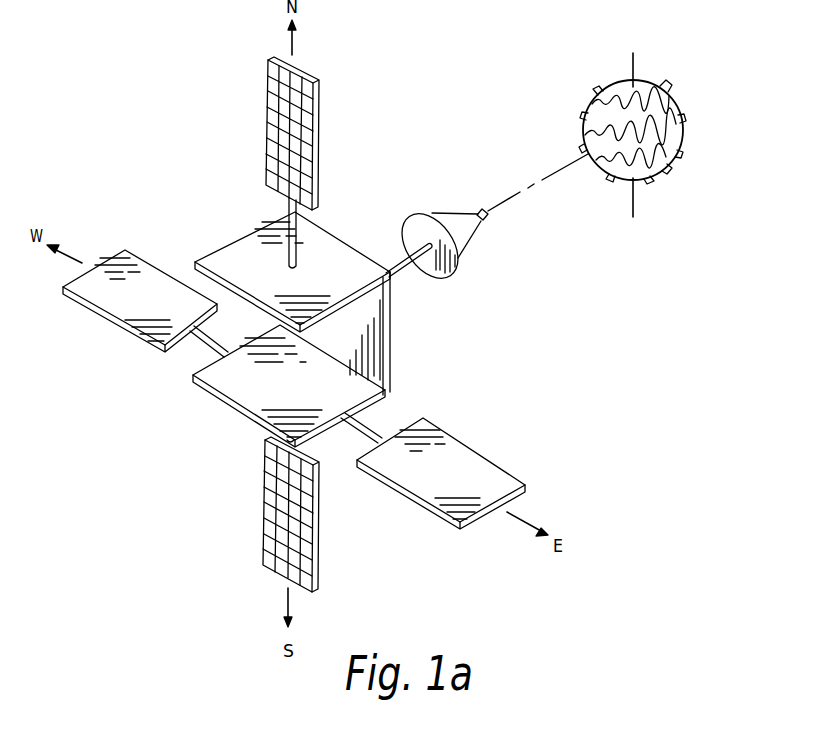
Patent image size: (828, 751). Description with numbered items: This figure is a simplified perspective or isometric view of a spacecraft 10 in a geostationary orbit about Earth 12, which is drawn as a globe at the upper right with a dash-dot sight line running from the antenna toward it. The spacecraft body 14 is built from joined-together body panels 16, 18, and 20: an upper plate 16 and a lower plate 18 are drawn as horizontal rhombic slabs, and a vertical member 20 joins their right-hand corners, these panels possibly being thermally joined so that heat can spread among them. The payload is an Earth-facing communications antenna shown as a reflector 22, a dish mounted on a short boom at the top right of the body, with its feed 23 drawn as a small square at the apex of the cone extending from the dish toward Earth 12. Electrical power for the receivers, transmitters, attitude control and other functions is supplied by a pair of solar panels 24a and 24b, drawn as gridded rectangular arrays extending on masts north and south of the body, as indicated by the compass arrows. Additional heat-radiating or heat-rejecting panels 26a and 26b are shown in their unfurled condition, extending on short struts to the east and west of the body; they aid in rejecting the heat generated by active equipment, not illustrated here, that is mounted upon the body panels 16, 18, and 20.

The spacecraft 10 is at (124, 470).
The Earth 12 is at (684, 127).
The satellite body 14 is at (184, 382).
The body panel 16 is at (343, 238).
The body panel 18 is at (240, 416).
The body panel 20 is at (392, 366).
The reflector 22 is at (447, 280).
The feed 23 is at (484, 221).
The solar panel 24a is at (320, 135).
The solar panel 24b is at (318, 566).
The heat-radiating panel 26a is at (502, 468).
The heat-radiating panel 26b is at (148, 262).